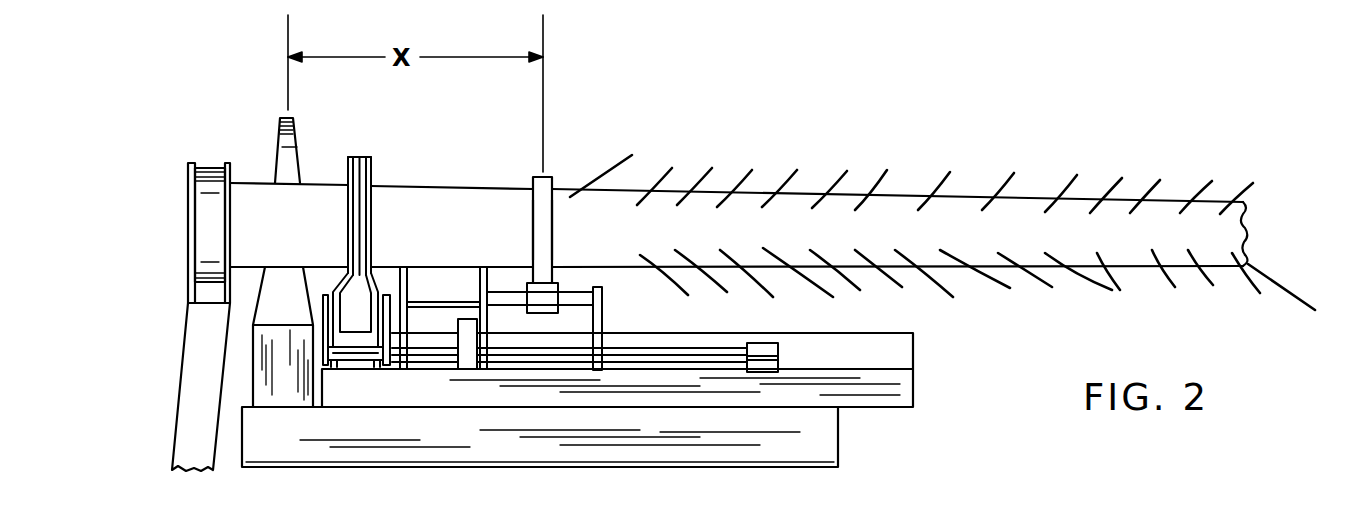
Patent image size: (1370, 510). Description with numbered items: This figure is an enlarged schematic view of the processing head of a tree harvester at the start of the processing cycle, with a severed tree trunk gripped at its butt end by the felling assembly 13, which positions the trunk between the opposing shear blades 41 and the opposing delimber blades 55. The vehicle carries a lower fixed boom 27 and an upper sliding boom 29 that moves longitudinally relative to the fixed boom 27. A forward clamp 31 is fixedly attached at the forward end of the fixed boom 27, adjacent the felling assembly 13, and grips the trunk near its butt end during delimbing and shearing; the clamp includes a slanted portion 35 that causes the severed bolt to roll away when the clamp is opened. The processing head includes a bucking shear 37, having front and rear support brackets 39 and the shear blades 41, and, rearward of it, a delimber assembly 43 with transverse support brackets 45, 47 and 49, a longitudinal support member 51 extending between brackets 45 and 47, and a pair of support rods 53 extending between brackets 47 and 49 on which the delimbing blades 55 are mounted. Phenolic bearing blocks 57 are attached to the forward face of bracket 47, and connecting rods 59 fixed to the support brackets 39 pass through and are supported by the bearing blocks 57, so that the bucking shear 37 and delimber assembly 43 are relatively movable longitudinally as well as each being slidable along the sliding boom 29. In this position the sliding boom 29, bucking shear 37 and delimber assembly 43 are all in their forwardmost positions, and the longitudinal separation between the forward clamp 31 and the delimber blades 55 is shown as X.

The felling assembly 13 is at (172, 216).
The fixed boom 27 is at (838, 437).
The sliding boom 29 is at (913, 357).
The forward clamp 31 is at (268, 151).
The slanted portion 35 is at (283, 337).
The bucking shear 37 is at (371, 151).
The support brackets 39 is at (327, 367).
The shear blades 41 is at (356, 229).
The delimber assembly 43 is at (526, 173).
The transverse support bracket 45 is at (409, 278).
The transverse support bracket 47 is at (486, 279).
The transverse support bracket 49 is at (604, 316).
The longitudinal support member 51 is at (424, 301).
The support rods 53 is at (575, 289).
The delimbing blades 55 is at (553, 221).
The bearing blocks 57 is at (479, 370).
The connecting rods 59 is at (701, 348).